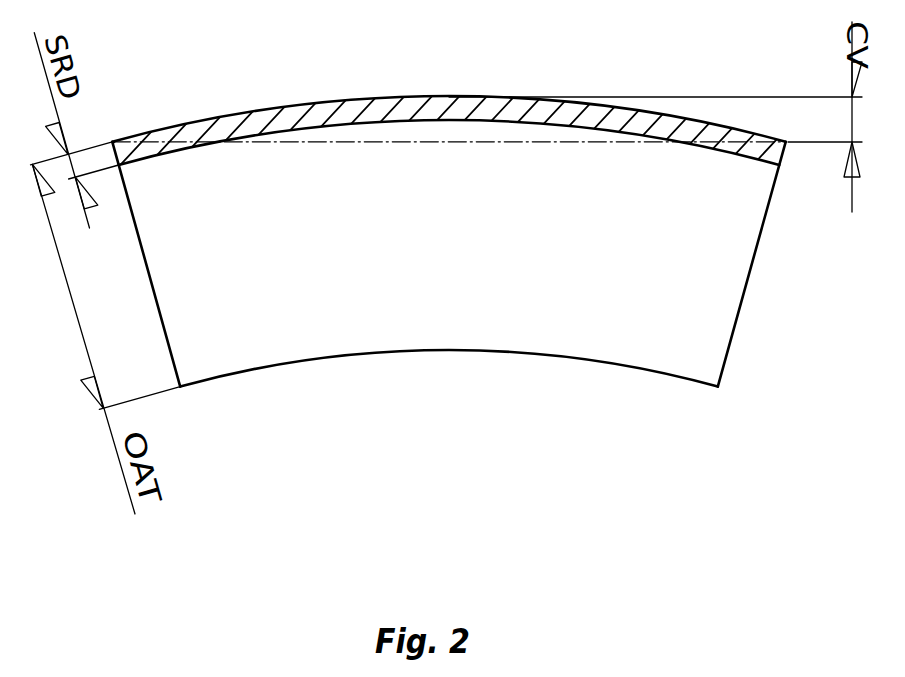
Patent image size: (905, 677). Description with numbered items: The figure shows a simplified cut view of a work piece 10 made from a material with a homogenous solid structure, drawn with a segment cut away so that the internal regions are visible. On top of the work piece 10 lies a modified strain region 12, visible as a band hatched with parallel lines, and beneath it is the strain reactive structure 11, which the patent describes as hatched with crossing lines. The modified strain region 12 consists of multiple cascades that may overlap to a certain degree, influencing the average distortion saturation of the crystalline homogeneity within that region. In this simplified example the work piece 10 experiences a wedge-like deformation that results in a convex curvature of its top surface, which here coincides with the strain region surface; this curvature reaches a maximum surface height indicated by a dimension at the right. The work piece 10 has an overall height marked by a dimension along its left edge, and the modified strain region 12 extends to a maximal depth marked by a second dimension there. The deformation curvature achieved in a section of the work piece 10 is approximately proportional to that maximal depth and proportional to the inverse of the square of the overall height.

The work piece 10 is at (557, 358).
The strain reactive structure 11 is at (407, 322).
The modified strain region 12 is at (420, 110).